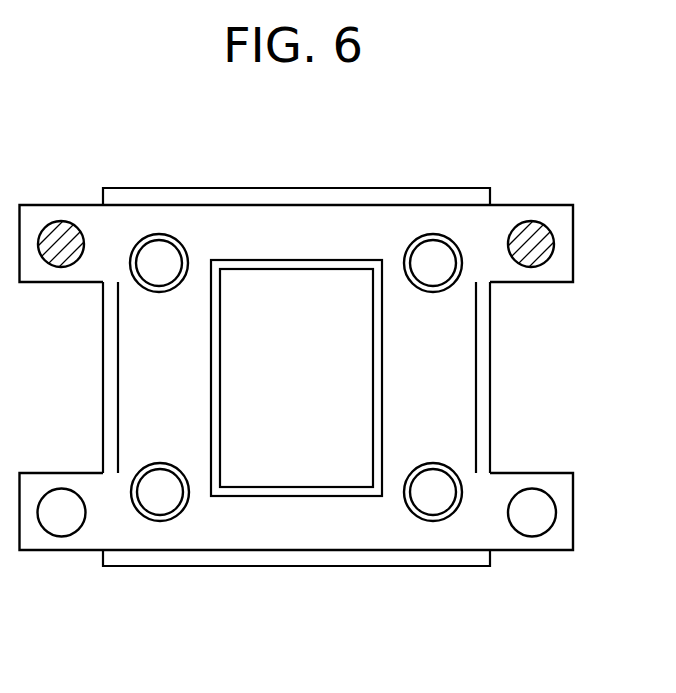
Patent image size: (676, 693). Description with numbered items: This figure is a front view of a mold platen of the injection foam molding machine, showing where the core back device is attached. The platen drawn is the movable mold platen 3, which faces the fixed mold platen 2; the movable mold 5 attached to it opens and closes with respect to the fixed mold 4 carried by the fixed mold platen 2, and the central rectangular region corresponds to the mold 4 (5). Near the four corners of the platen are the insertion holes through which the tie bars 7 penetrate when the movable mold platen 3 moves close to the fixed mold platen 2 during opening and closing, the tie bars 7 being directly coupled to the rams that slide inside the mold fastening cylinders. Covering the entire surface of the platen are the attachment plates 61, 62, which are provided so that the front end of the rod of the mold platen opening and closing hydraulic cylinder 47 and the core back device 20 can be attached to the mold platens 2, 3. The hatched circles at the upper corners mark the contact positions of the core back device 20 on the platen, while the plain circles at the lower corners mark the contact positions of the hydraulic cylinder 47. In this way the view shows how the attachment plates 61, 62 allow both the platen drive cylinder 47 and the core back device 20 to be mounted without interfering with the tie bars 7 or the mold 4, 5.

The fixed mold platen 2 is at (296, 353).
The movable mold platen 3 is at (218, 188).
The fixed mold 4 is at (296, 456).
The movable mold 5 is at (291, 477).
The tie bars 7 is at (159, 248).
The core back device 20 is at (62, 221).
The mold platen opening and closing hydraulic cylinder 47 is at (54, 530).
The attachment plate 61 is at (457, 138).
The attachment plate 62 is at (471, 188).